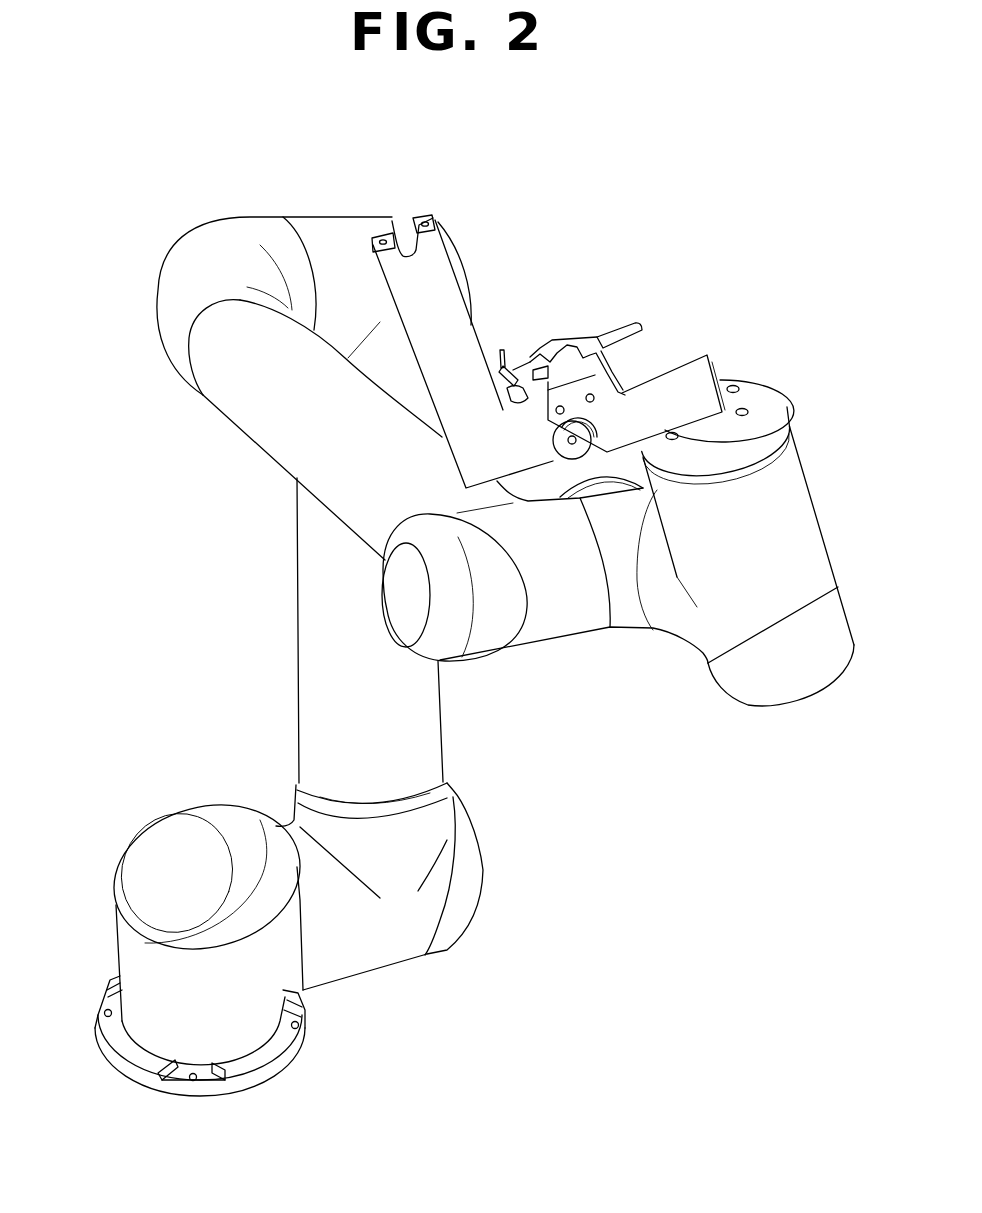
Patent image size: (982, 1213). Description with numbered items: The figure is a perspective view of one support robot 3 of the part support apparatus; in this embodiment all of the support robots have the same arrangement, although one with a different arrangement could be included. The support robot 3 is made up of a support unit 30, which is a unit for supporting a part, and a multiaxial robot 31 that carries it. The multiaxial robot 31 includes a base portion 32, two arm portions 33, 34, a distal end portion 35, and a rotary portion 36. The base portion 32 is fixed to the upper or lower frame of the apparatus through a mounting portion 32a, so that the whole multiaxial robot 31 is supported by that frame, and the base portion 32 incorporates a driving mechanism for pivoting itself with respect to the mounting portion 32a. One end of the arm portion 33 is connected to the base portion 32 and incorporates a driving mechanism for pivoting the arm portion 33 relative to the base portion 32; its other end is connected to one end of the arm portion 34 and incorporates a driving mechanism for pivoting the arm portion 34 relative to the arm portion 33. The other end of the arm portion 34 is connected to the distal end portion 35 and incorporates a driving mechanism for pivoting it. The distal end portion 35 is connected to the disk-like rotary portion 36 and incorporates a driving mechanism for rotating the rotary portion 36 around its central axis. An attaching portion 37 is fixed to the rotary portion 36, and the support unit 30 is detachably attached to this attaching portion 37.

The support robot 3 is at (724, 214).
The support unit 30 is at (478, 339).
The multiaxial robot 31 is at (526, 953).
The base portion 32 is at (148, 856).
The mounting portion 32a is at (300, 1057).
The arm portion 33 is at (300, 672).
The arm portion 34 is at (250, 447).
The distal end portion 35 is at (793, 517).
The rotary portion 36 is at (756, 381).
The attaching portion 37 is at (644, 348).